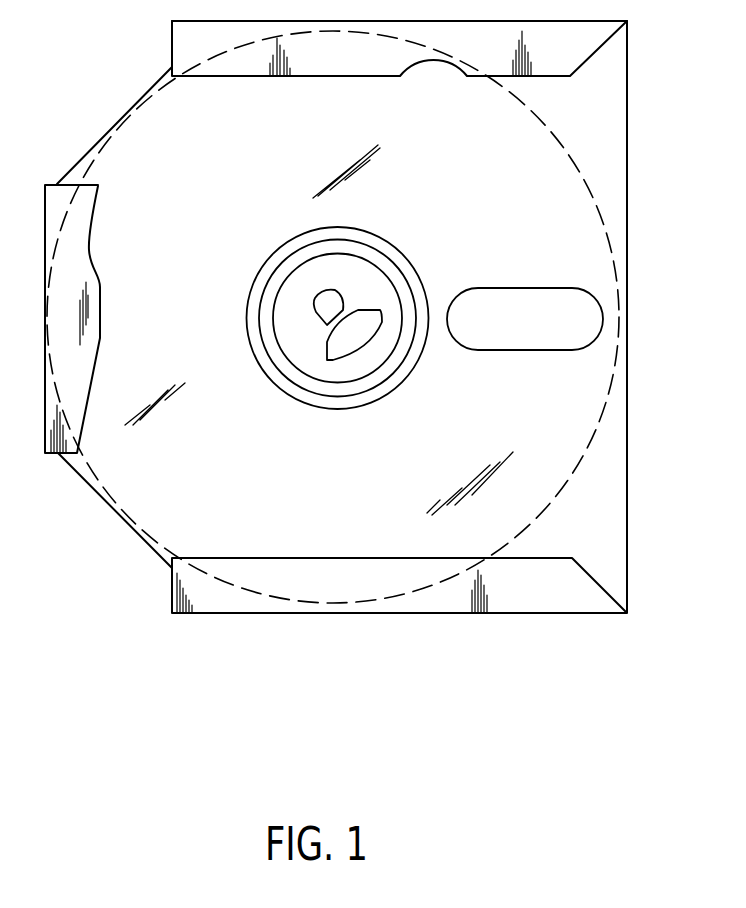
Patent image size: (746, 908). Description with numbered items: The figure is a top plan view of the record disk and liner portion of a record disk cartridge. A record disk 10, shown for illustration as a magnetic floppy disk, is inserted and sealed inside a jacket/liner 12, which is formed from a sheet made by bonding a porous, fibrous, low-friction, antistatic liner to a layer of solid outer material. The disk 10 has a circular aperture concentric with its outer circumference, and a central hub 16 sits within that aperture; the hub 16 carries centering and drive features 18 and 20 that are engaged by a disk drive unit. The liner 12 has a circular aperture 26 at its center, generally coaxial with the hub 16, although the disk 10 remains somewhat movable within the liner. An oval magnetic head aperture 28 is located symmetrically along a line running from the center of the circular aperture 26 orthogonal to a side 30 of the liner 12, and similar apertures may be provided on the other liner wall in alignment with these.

The record disk 10 is at (571, 481).
The jacket/liner 12 is at (365, 620).
The central hub 16 is at (307, 355).
The centering feature 18 is at (316, 297).
The drive feature 20 is at (369, 329).
The circular aperture 26 is at (397, 257).
The oval magnetic head aperture 28 is at (506, 347).
The side of the liner 30 is at (626, 553).